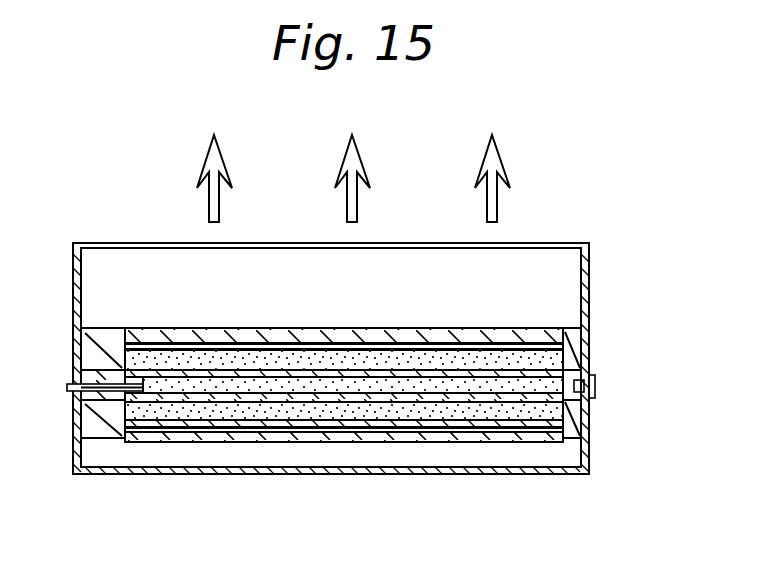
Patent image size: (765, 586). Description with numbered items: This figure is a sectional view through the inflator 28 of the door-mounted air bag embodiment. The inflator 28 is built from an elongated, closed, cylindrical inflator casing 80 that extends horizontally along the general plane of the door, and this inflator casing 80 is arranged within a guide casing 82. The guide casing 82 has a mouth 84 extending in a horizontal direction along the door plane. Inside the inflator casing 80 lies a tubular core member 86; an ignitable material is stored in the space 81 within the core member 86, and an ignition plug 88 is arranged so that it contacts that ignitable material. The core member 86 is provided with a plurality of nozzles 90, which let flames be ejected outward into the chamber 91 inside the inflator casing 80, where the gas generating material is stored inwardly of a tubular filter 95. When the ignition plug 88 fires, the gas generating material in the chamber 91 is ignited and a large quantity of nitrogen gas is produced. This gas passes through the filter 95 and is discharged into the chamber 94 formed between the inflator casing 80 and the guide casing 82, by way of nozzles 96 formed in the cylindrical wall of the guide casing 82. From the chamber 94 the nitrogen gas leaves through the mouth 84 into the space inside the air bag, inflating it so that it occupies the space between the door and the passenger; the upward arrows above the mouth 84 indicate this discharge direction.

The inflator 28 is at (155, 455).
The inflator casing 80 is at (324, 422).
The space 81 is at (327, 387).
The guide casing 82 is at (359, 372).
The mouth 84 is at (385, 243).
The tubular core member 86 is at (407, 371).
The ignition plug 88 is at (104, 440).
The nozzles 90 is at (243, 403).
The chamber 91 is at (420, 445).
The chamber 94 is at (362, 453).
The tubular filter 95 is at (520, 442).
The nozzles 96 is at (196, 443).